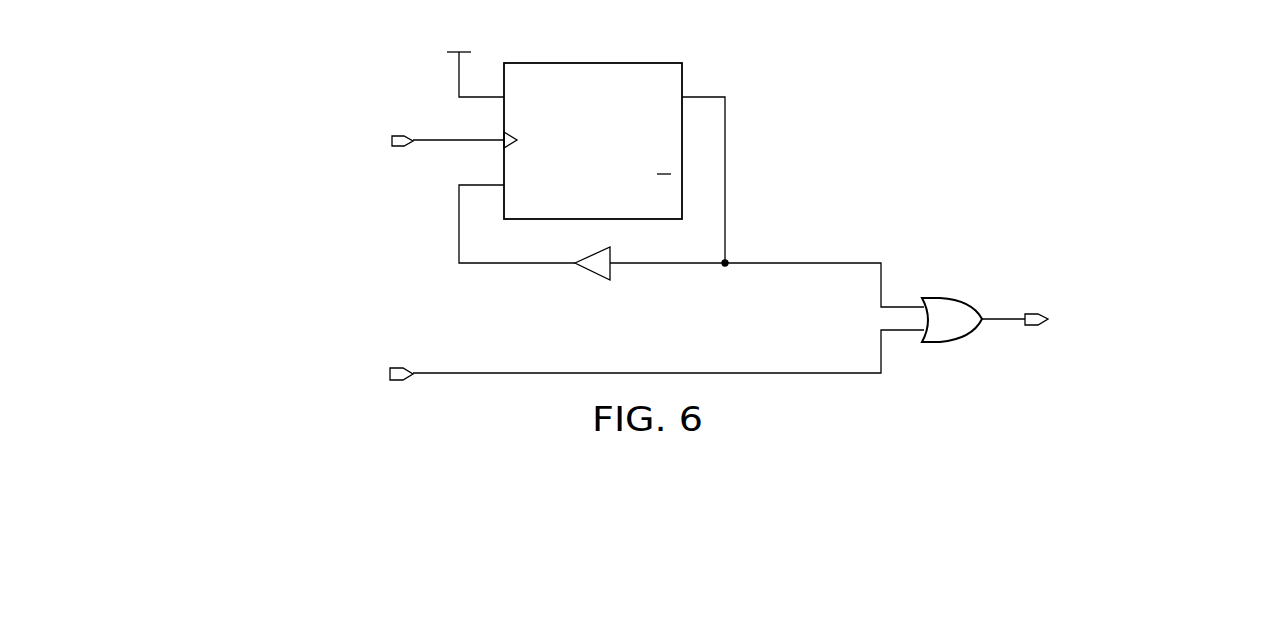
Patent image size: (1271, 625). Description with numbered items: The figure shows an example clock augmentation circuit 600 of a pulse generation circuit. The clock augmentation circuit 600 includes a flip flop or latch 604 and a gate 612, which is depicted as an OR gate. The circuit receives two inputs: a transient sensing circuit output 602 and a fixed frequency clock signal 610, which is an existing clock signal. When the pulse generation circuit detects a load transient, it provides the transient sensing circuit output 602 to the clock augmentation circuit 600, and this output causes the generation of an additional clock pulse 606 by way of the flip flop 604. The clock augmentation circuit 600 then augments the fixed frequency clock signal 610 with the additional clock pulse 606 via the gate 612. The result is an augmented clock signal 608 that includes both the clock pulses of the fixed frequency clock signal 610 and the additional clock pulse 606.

The clock augmentation circuit 600 is at (976, 91).
The transient sensing circuit output 602 is at (398, 133).
The flip flop 604 is at (593, 62).
The additional clock pulse 606 is at (802, 266).
The augmented clock signal 608 is at (1030, 326).
The fixed frequency clock signal 610 is at (397, 380).
The gate 612 is at (950, 343).